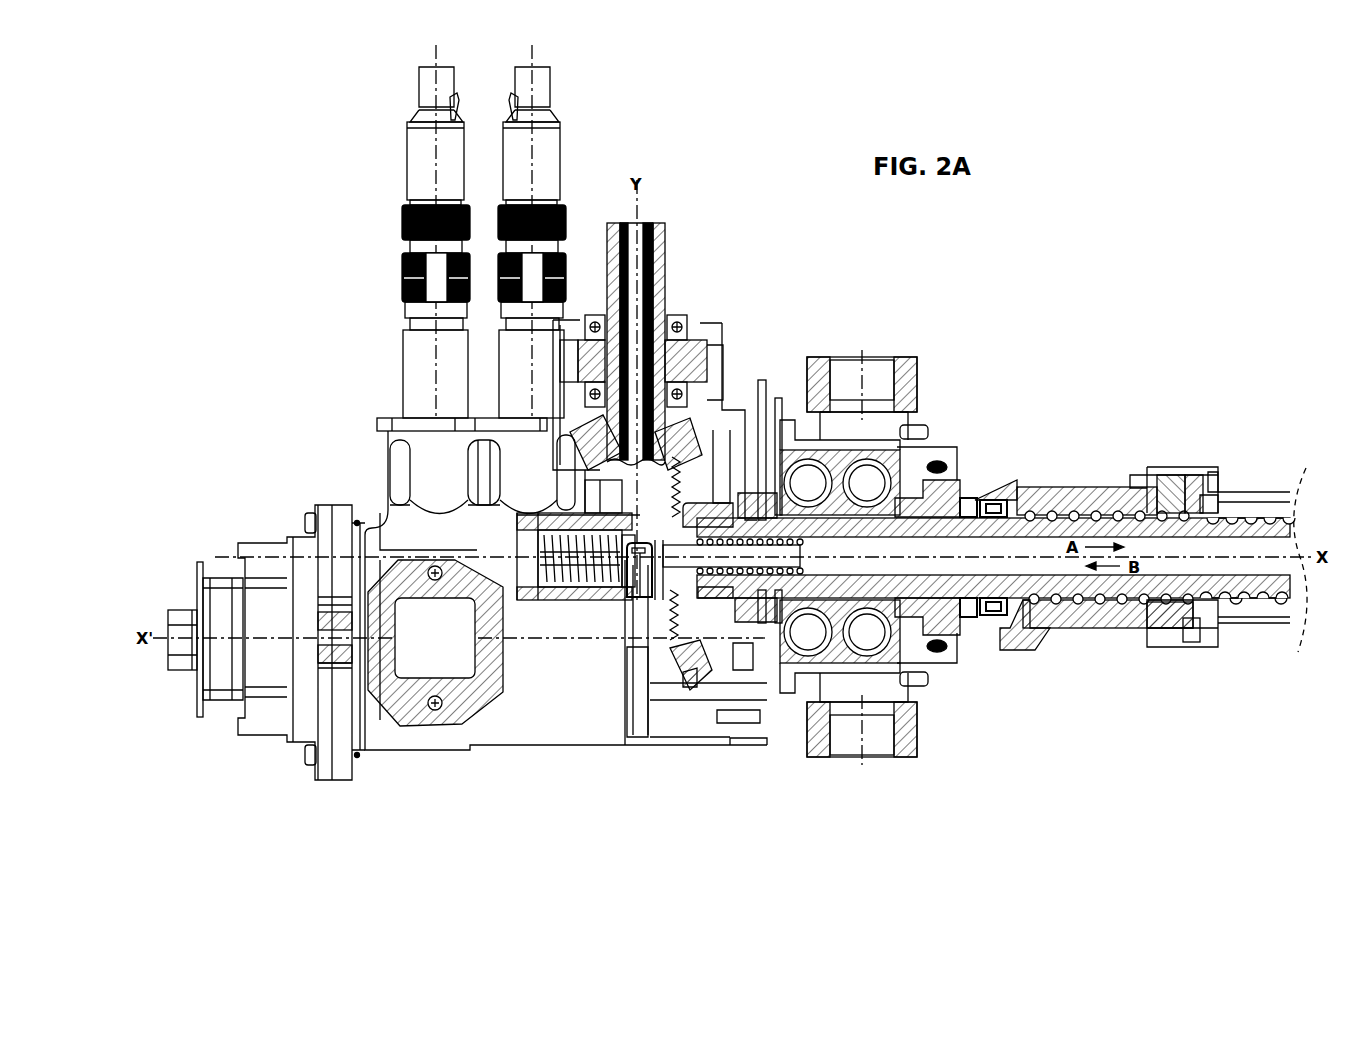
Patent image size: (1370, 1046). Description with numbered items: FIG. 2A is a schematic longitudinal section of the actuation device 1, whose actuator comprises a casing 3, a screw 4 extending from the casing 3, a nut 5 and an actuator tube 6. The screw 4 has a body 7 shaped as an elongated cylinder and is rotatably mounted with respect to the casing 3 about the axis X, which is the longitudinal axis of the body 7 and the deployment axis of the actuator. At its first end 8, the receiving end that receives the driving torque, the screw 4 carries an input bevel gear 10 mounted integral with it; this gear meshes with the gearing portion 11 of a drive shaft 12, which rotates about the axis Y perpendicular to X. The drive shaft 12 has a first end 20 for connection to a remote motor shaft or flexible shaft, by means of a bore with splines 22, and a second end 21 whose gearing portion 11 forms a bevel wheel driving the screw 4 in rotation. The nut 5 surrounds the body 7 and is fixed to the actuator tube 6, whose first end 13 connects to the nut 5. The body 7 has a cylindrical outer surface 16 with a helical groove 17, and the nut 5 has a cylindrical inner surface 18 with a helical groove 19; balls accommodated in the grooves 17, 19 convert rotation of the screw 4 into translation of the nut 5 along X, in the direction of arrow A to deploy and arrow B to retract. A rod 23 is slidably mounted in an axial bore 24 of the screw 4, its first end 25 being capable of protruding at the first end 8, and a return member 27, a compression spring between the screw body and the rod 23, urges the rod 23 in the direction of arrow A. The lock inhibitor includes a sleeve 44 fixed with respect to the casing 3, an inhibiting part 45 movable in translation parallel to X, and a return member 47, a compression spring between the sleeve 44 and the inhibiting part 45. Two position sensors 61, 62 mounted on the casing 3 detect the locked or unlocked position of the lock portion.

The device 1 is at (968, 247).
The casing 3 is at (703, 738).
The screw 4 is at (1108, 597).
The nut 5 is at (1126, 608).
The actuator tube 6 is at (1247, 493).
The body 7 is at (1233, 600).
The first end 8 is at (765, 600).
The input bevel gear 10 is at (710, 665).
The gearing portion 11 is at (702, 420).
The drive shaft 12 is at (660, 284).
The first end 13 is at (1195, 626).
The cylindrical outer surface 16 is at (1238, 592).
The helical groove 17 is at (1290, 600).
The cylindrical inner surface 18 is at (1030, 598).
The helical groove 19 is at (1068, 598).
The first end 20 is at (607, 245).
The second end 21 is at (598, 445).
The splines 22 is at (647, 249).
The rod 23 is at (1180, 540).
The axial bore 24 is at (1043, 542).
The first end 25 is at (668, 600).
The return member 27 is at (770, 600).
The sleeve 44 is at (541, 590).
The inhibiting part 45 is at (556, 585).
The return member 47 is at (578, 580).
The position sensor 61 is at (411, 150).
The position sensor 62 is at (547, 150).